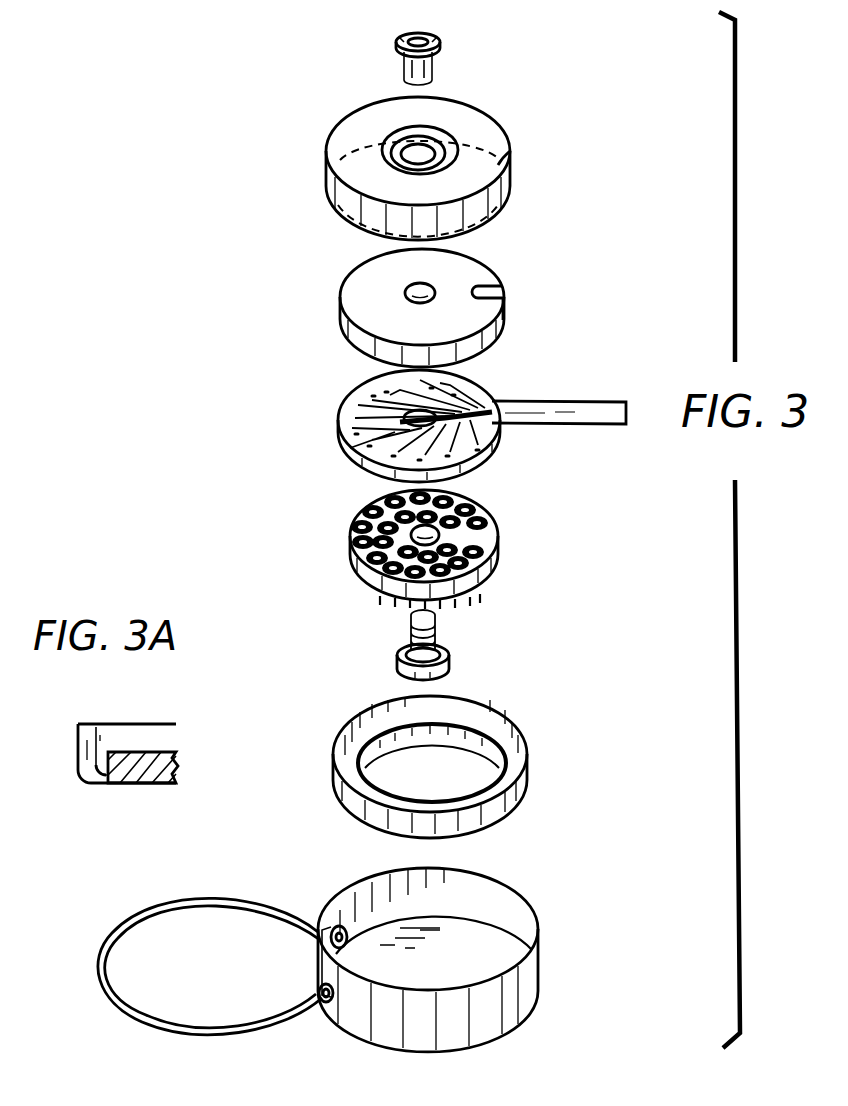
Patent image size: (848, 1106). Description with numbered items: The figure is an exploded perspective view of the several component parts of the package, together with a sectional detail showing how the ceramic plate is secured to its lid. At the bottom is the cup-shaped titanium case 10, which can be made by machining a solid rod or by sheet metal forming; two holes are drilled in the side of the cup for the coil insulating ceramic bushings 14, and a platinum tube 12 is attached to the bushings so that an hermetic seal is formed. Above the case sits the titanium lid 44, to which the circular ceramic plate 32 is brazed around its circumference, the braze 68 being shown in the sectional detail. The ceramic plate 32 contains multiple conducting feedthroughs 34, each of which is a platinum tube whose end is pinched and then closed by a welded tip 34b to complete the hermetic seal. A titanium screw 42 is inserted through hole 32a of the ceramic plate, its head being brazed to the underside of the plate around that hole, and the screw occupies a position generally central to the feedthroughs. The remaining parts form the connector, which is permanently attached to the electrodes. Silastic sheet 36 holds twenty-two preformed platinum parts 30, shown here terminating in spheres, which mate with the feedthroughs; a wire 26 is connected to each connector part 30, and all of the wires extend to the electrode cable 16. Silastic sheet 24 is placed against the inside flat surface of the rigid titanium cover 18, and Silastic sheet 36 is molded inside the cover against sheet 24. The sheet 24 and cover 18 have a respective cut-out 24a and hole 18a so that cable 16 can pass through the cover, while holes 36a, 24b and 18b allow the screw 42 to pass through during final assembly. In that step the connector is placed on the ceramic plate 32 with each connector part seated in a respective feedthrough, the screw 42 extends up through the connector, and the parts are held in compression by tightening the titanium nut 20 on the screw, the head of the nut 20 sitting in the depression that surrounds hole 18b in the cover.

In FIG. 3, the titanium case 10 is at (540, 965).
In FIG. 3, the platinum tube 12 is at (206, 894).
In FIG. 3, the coil insulating ceramic bushings 14 is at (340, 903).
In FIG. 3, the electrode cable 16 is at (580, 400).
In FIG. 3, the rigid titanium cover 18 is at (332, 152).
In FIG. 3, the hole in cover 18a is at (512, 176).
In FIG. 3, the hole in cover for screw 18b is at (432, 147).
In FIG. 3, the titanium nut 20 is at (442, 40).
In FIG. 3, the Silastic sheet 24 is at (498, 263).
In FIG. 3, the cut-out in Silastic sheet 24a is at (500, 292).
In FIG. 3, the hole in Silastic sheet 24b is at (404, 292).
In FIG. 3, the wire 26 is at (462, 398).
In FIG. 3, the preformed platinum parts 30 is at (498, 463).
In FIG. 3, the ceramic plate 32 is at (352, 564).
In FIG. 3A, the ceramic plate 32 is at (148, 784).
In FIG. 3, the hole of ceramic plate 32a is at (374, 536).
In FIG. 3, the conducting feedthroughs 34 is at (400, 601).
In FIG. 3, the welded tip of feedthrough 34b is at (484, 515).
In FIG. 3, the Silastic sheet 36 is at (342, 458).
In FIG. 3, the hole in Silastic sheet 36a is at (384, 410).
In FIG. 3, the titanium screw 42 is at (452, 651).
In FIG. 3, the titanium lid 44 is at (524, 764).
In FIG. 3A, the titanium lid 44 is at (80, 730).
In FIG. 3A, the braze joint 68 is at (100, 782).